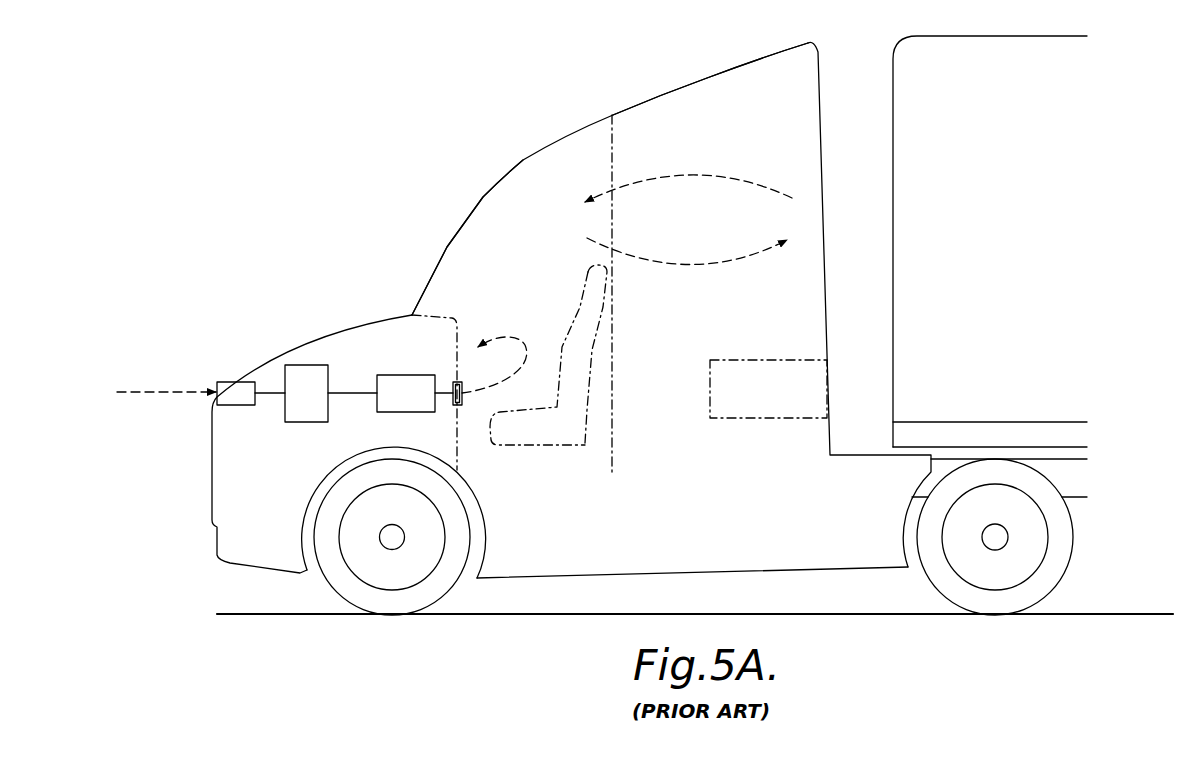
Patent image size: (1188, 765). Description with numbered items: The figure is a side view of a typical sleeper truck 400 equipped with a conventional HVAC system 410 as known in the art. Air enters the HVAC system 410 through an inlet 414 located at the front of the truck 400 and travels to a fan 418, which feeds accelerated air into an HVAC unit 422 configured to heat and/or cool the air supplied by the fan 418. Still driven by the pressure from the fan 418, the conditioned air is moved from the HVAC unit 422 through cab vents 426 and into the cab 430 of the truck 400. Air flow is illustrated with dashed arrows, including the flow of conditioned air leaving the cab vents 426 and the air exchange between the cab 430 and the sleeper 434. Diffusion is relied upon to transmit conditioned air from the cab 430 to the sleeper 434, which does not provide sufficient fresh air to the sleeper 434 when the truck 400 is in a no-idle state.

The truck 400 is at (453, 114).
The HVAC system 410 is at (373, 362).
The inlet 414 is at (238, 382).
The fan 418 is at (305, 365).
The HVAC unit 422 is at (407, 375).
The cab vents 426 is at (460, 382).
The cab 430 is at (521, 216).
The sleeper 434 is at (695, 116).